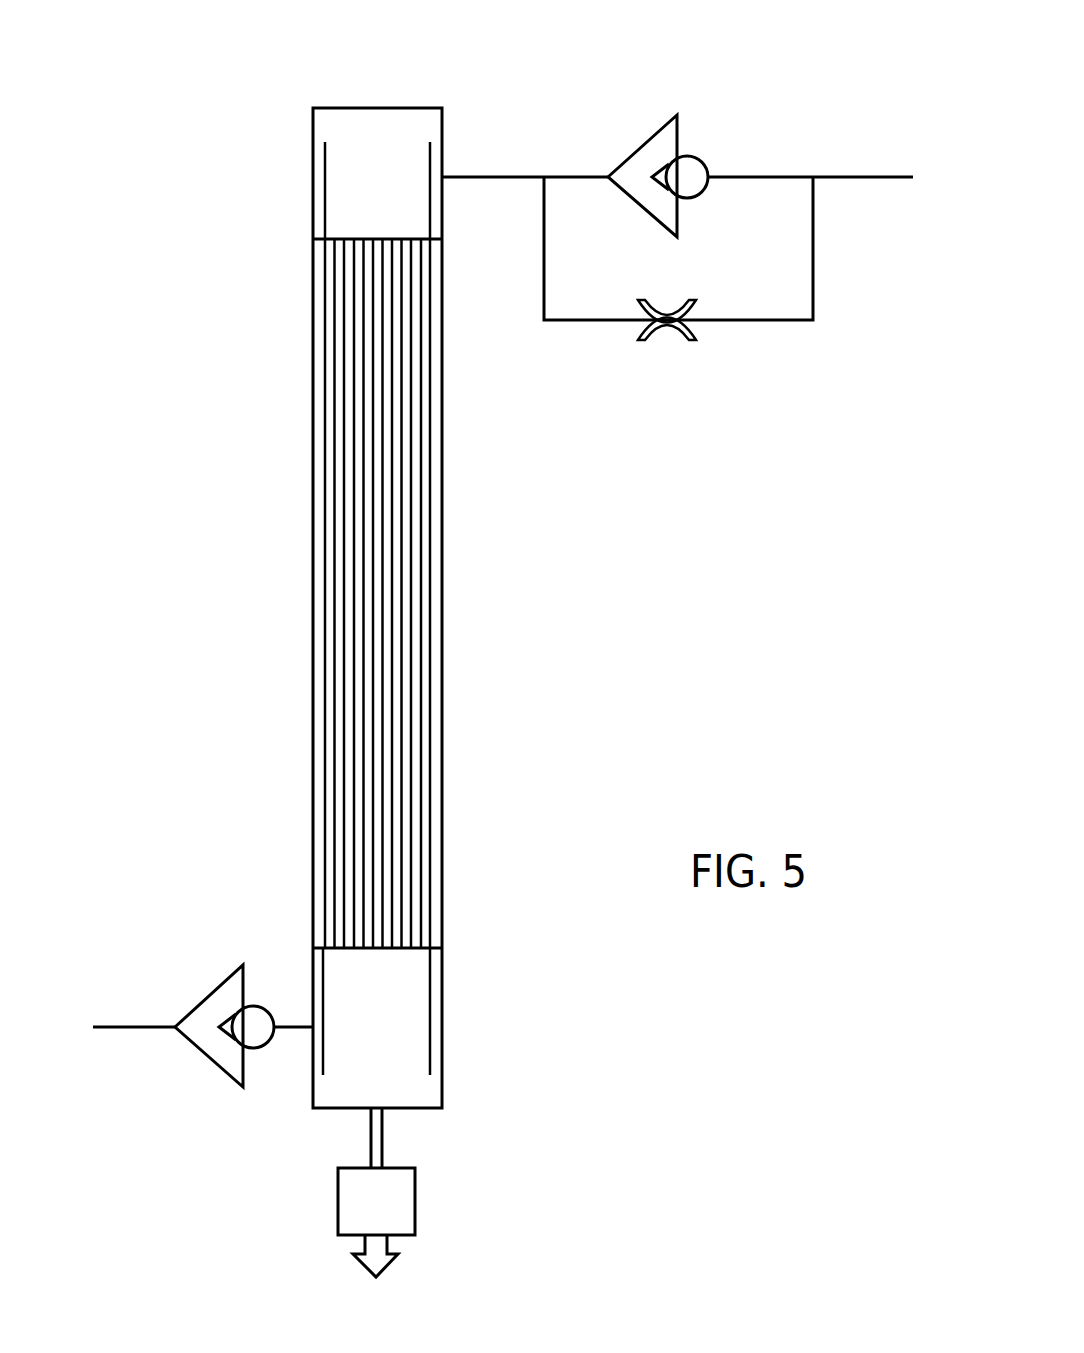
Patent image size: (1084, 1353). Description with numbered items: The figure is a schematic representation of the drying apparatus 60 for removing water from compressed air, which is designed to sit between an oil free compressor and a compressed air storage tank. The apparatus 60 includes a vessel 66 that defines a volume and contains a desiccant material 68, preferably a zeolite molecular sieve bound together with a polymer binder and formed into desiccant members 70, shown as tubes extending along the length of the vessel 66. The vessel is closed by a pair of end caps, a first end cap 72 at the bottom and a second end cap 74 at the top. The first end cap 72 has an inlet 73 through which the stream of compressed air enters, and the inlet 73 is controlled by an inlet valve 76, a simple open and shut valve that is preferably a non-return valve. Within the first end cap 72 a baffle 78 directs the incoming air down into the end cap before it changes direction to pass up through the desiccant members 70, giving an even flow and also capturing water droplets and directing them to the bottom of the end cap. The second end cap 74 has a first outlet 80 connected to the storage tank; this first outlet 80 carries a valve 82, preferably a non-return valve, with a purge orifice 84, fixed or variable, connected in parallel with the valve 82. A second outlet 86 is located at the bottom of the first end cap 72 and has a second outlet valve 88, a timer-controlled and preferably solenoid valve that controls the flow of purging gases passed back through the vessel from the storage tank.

The apparatus for removing water from compressed air 60 is at (512, 487).
The vessel 66 is at (316, 497).
The desiccant material 68 is at (358, 655).
The desiccant members 70 is at (402, 768).
The first end cap 72 is at (442, 1083).
The inlet 73 is at (310, 1027).
The second end cap 74 is at (313, 130).
The inlet valve 76 is at (218, 1048).
The baffle 78 is at (430, 1021).
The first outlet 80 is at (445, 176).
The valve 82 is at (658, 147).
The purge orifice 84 is at (668, 324).
The second outlet 86 is at (377, 1112).
The second outlet valve 88 is at (405, 1198).